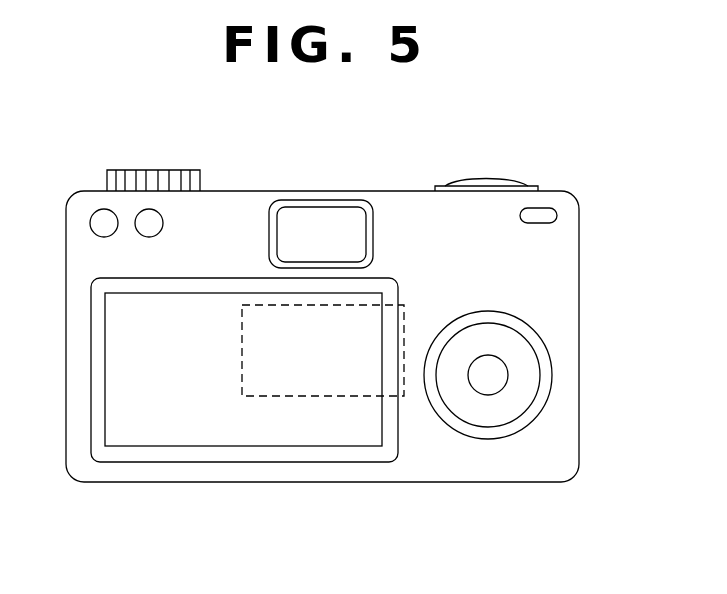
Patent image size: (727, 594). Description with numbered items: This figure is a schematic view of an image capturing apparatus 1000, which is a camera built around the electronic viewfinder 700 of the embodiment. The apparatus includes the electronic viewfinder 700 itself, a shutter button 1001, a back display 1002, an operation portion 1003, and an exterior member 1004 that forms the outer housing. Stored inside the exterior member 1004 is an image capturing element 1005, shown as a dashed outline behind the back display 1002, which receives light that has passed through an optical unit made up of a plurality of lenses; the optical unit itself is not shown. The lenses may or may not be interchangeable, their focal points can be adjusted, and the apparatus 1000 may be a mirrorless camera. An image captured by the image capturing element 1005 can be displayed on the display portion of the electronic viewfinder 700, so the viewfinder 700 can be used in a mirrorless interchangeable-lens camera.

The image capturing apparatus 1000 is at (371, 311).
The electronic viewfinder 700 is at (322, 222).
The shutter button 1001 is at (485, 176).
The back display 1002 is at (233, 432).
The operation portion 1003 is at (527, 375).
The exterior member 1004 is at (565, 281).
The image capturing element 1005 is at (337, 397).